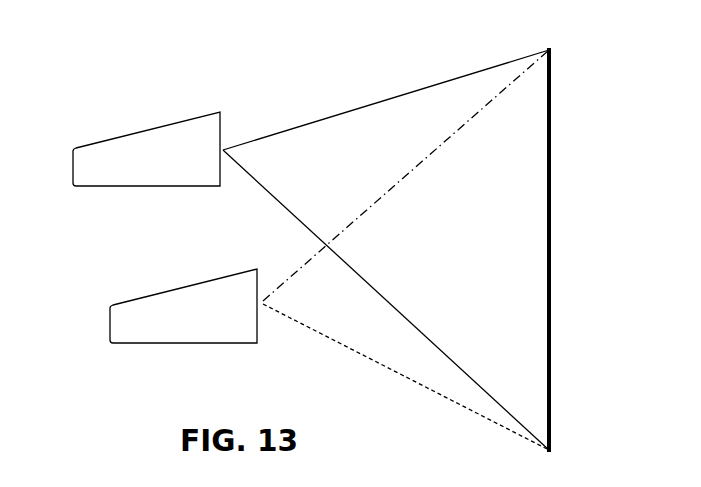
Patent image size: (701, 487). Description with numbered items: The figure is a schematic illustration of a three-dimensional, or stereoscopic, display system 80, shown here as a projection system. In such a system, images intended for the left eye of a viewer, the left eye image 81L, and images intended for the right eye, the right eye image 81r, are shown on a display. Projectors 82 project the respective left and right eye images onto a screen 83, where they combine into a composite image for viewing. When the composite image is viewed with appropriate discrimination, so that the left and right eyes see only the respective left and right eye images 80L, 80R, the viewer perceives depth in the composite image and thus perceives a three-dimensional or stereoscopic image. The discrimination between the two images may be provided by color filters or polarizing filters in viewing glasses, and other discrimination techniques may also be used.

The 3D display system 80 is at (148, 184).
The left eye image 81L is at (119, 137).
The right eye image 81r is at (146, 293).
The left eye image 80L is at (325, 120).
The right eye image 80R is at (330, 345).
The projector 82 is at (557, 193).
The screen 83 is at (498, 147).